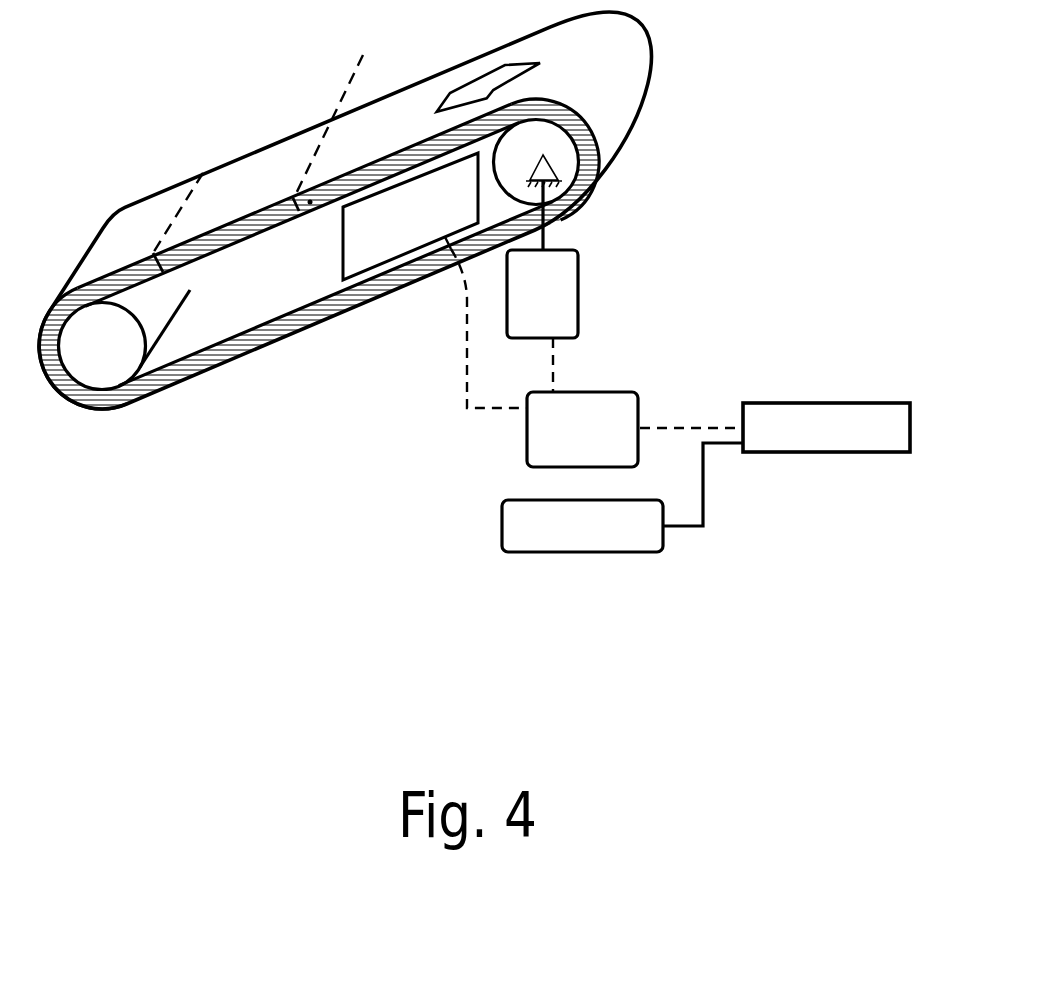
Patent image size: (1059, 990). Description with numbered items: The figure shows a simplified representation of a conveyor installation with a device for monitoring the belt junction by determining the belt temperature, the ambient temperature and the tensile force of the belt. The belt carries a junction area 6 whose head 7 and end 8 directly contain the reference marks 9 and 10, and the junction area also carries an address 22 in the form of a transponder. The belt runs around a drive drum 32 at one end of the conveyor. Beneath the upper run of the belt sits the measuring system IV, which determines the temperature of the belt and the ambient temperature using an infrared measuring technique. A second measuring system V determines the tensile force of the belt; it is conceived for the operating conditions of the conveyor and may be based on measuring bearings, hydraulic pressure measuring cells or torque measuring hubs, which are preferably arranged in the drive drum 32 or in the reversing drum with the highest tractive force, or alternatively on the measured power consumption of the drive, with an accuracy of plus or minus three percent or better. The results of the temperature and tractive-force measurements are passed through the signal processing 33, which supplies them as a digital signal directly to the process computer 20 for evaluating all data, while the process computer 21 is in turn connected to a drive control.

The junction area 6 is at (253, 173).
The head of the junction area 7 is at (190, 197).
The end of the junction area 8 is at (331, 114).
The reference mark 9 is at (143, 247).
The reference mark 10 is at (283, 230).
The address 22 is at (308, 218).
The drive drum 32 is at (625, 30).
The measuring system IV is at (410, 216).
The measuring system V is at (555, 290).
The signal processing 33 is at (572, 430).
The process computer 20 is at (810, 442).
The process computer 21 is at (565, 535).